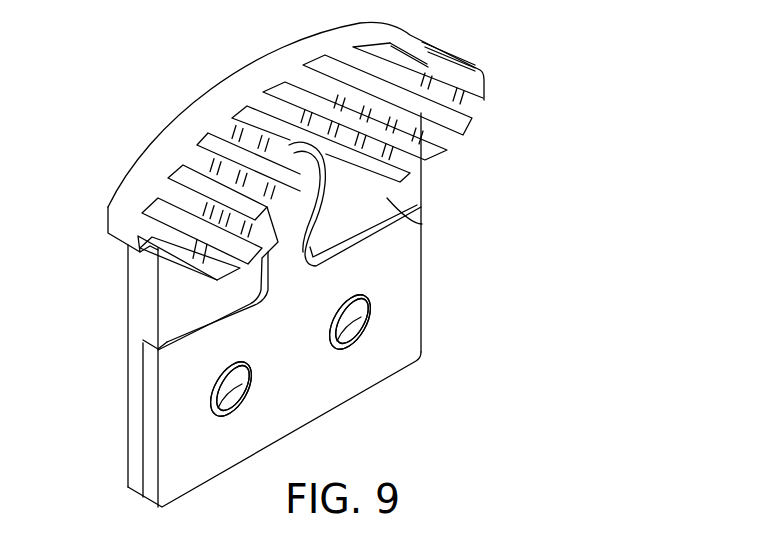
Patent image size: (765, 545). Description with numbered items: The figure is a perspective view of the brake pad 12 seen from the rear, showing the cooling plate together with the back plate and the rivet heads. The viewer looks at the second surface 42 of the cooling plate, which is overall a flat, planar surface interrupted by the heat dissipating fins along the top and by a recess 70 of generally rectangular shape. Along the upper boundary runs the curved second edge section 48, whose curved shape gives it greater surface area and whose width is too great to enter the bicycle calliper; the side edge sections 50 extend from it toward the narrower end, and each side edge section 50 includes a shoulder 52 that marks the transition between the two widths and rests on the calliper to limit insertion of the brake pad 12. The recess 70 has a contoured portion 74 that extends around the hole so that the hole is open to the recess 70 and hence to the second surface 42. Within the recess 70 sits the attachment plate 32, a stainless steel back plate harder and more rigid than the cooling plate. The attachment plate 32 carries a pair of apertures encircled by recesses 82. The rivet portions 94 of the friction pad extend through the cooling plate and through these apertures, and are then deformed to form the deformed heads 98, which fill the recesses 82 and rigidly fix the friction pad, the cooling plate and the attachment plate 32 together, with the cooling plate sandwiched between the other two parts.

The brake pad 12 is at (157, 83).
The second edge section 48 is at (267, 68).
The shoulder 52 is at (117, 240).
The contoured portion 74 is at (325, 246).
The second surface 42 is at (422, 223).
The side edge section 50 is at (422, 181).
The attachment plate 32 is at (387, 273).
The recess 70 is at (158, 350).
The recess 82 is at (363, 323).
The rivet portion 94 is at (353, 315).
The deformed head 98 is at (292, 354).